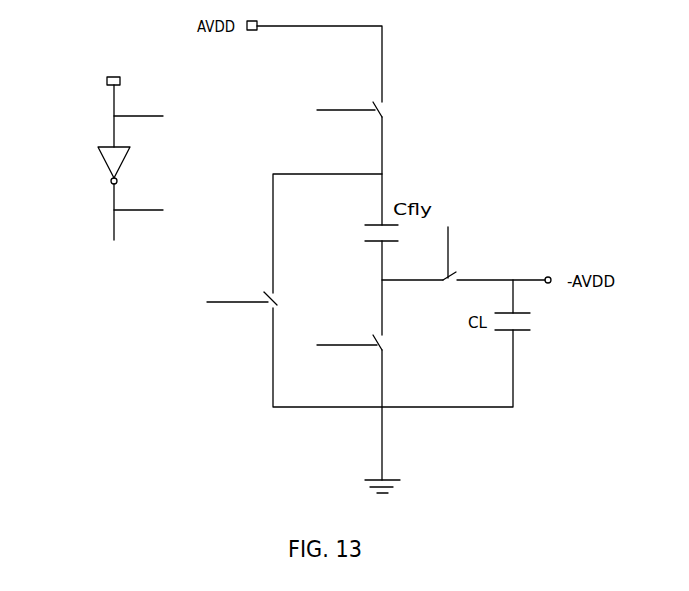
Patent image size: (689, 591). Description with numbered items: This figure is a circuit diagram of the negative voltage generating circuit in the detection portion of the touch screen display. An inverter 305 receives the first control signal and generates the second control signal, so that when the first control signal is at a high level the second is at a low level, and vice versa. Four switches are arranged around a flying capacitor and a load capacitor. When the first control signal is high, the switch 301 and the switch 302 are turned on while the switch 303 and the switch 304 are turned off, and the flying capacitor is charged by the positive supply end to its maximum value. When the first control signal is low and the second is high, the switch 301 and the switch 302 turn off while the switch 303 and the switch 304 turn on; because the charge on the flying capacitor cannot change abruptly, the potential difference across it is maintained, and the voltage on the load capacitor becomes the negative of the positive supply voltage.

The switch 301 is at (382, 117).
The switch 302 is at (382, 348).
The switch 303 is at (277, 303).
The switch 304 is at (462, 272).
The inverter 305 is at (102, 147).